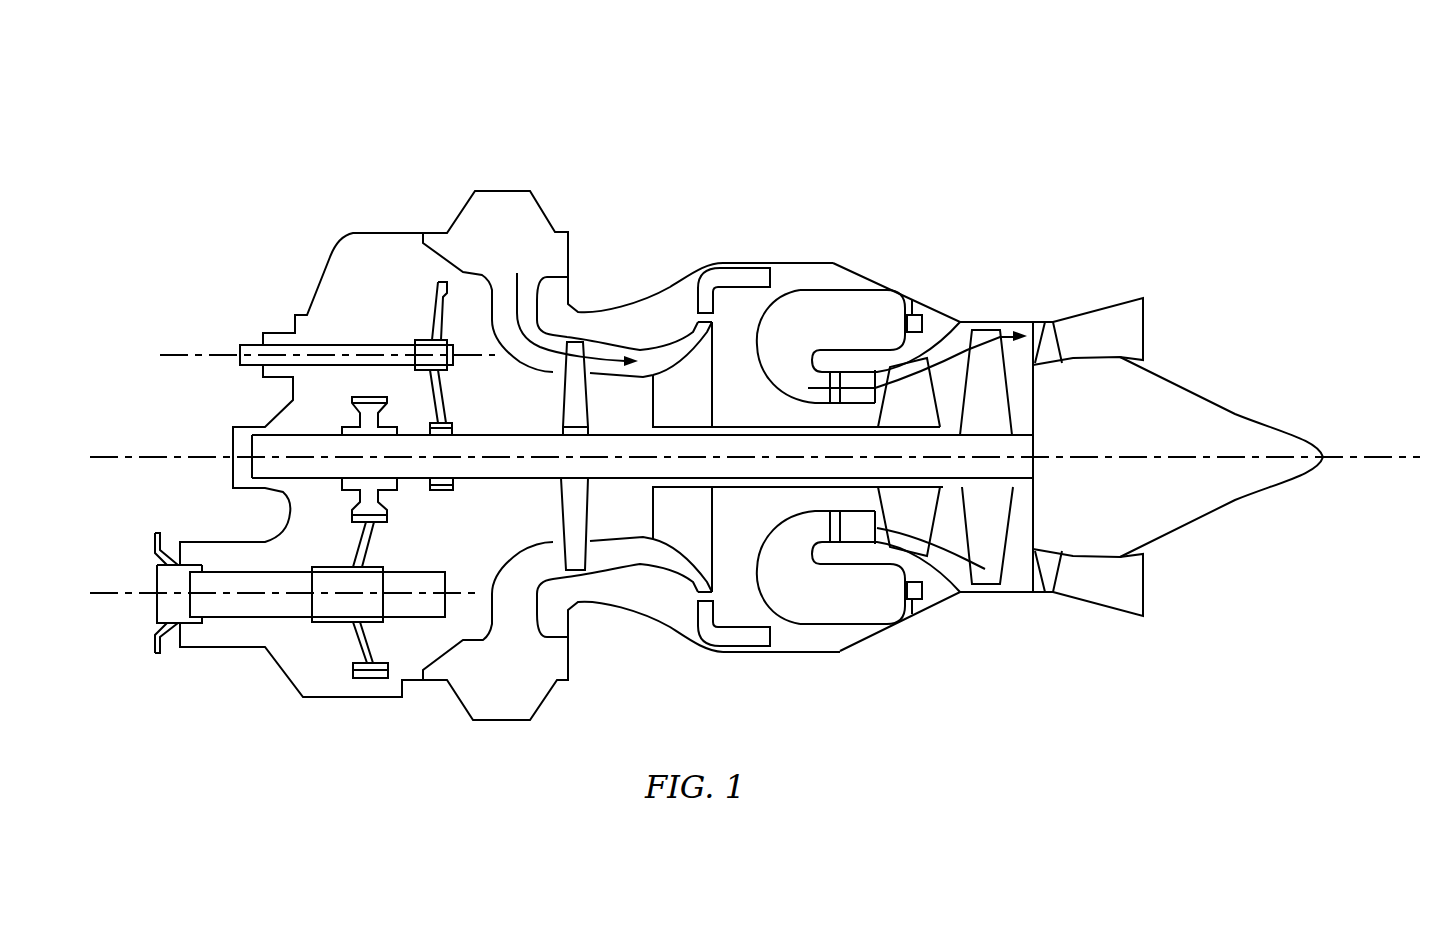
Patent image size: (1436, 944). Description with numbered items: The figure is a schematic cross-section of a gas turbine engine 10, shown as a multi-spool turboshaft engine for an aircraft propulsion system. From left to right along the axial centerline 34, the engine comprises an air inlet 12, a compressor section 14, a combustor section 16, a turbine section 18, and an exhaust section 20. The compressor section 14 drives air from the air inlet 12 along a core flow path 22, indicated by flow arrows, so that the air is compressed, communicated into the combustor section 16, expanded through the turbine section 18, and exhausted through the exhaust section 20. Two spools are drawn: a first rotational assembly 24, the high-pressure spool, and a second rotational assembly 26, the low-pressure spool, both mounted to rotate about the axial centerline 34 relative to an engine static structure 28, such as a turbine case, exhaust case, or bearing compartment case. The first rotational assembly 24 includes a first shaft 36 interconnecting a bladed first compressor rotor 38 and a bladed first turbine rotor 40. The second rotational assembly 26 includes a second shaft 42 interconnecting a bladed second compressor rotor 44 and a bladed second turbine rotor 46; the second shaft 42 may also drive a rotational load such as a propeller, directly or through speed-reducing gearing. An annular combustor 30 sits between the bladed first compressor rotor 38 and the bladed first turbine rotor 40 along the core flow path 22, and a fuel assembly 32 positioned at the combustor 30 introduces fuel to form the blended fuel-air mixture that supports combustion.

The gas turbine engine 10 is at (1160, 158).
The air inlet 12 is at (497, 190).
The compressor section 14 is at (630, 311).
The combustor section 16 is at (835, 262).
The turbine section 18 is at (978, 312).
The exhaust section 20 is at (1165, 295).
The core flow path 22 is at (553, 372).
The first rotational assembly 24 is at (738, 402).
The second rotational assembly 26 is at (624, 497).
The engine static structure 28 is at (875, 270).
The annular combustor 30 is at (812, 307).
The fuel assembly 32 is at (920, 317).
The axial centerline 34 is at (1400, 460).
The first shaft 36 is at (720, 480).
The bladed first compressor rotor 38 is at (690, 382).
The bladed first turbine rotor 40 is at (913, 535).
The second shaft 42 is at (490, 468).
The bladed second compressor rotor 44 is at (570, 510).
The bladed second turbine rotor 46 is at (993, 570).